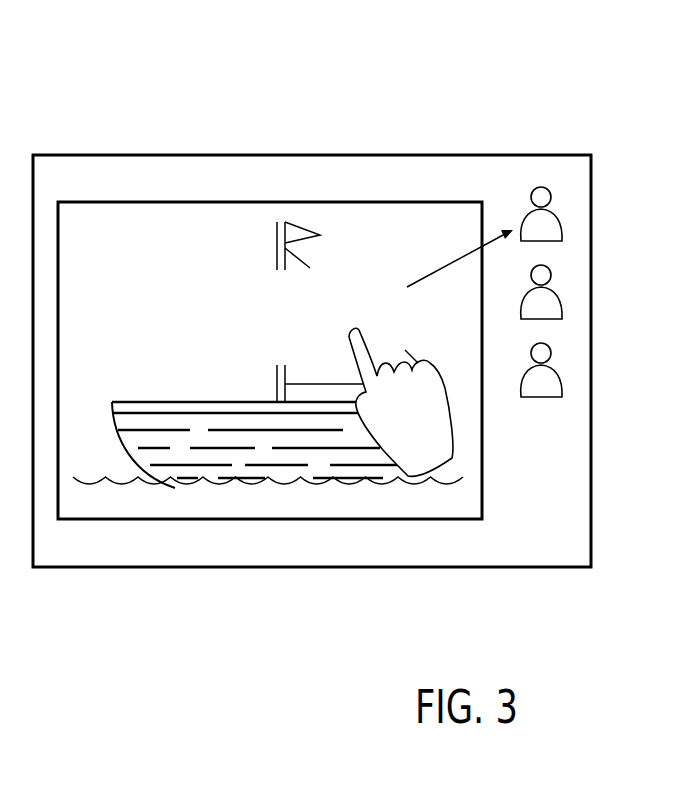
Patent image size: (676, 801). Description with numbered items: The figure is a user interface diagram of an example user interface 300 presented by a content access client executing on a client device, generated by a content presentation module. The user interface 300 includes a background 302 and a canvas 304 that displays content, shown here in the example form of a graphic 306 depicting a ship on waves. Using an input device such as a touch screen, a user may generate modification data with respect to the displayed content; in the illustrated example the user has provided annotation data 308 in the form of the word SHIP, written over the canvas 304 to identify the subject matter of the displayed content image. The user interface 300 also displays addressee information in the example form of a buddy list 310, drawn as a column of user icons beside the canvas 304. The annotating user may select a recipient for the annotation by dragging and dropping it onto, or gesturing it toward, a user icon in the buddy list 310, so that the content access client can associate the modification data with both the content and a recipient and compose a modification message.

The user interface 300 is at (441, 45).
The background 302 is at (243, 525).
The canvas 304 is at (250, 185).
The graphic 306 is at (203, 455).
The annotation data 308 is at (173, 273).
The buddy list 310 is at (551, 170).